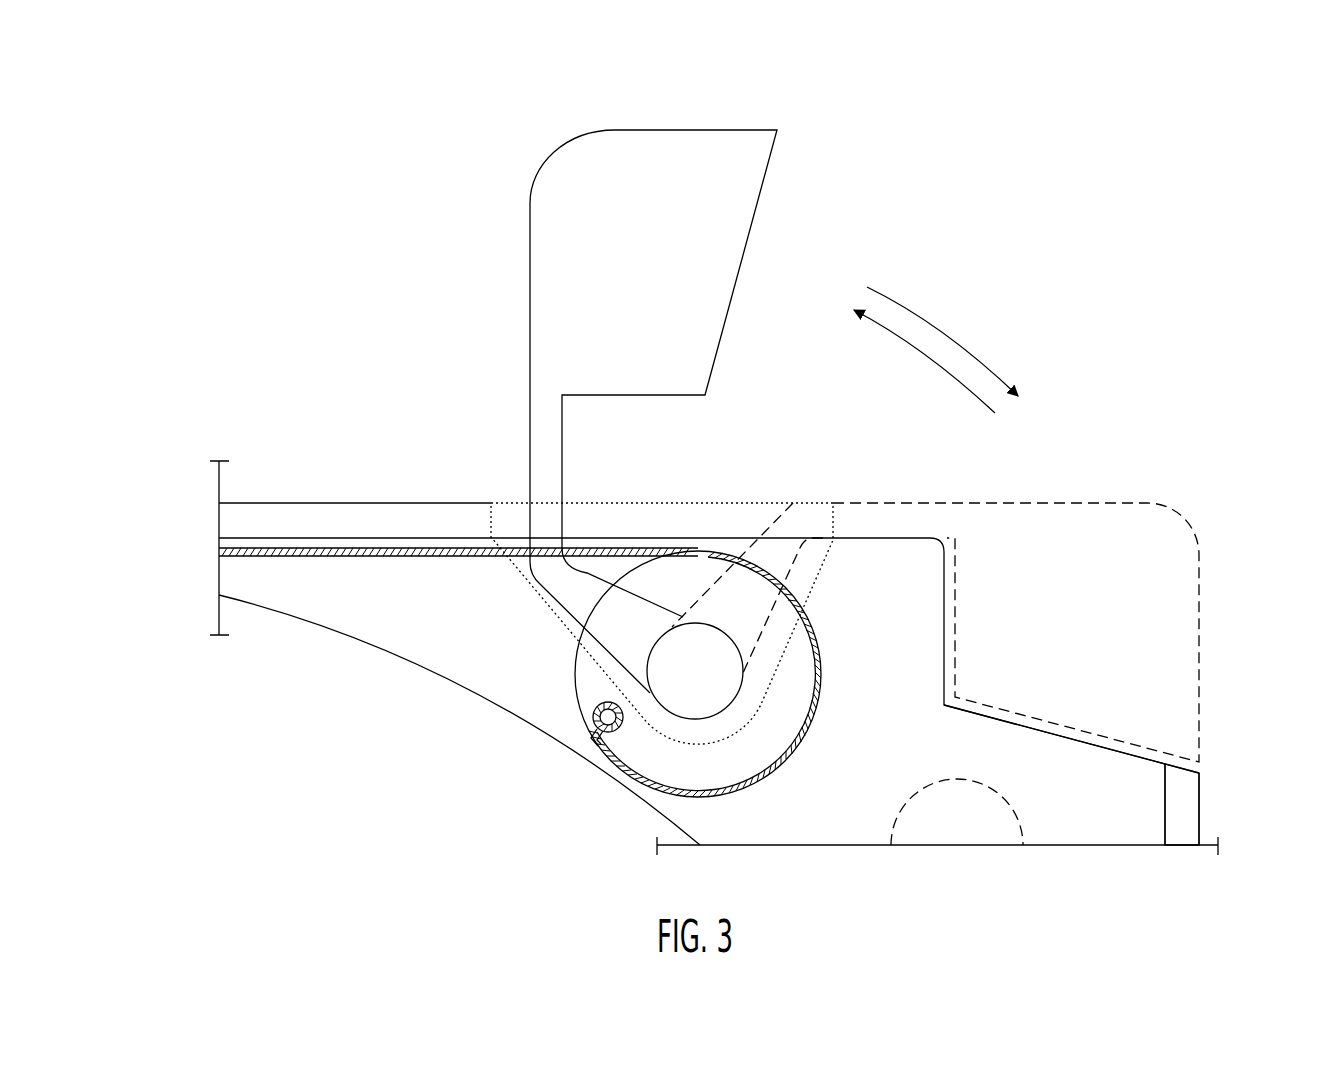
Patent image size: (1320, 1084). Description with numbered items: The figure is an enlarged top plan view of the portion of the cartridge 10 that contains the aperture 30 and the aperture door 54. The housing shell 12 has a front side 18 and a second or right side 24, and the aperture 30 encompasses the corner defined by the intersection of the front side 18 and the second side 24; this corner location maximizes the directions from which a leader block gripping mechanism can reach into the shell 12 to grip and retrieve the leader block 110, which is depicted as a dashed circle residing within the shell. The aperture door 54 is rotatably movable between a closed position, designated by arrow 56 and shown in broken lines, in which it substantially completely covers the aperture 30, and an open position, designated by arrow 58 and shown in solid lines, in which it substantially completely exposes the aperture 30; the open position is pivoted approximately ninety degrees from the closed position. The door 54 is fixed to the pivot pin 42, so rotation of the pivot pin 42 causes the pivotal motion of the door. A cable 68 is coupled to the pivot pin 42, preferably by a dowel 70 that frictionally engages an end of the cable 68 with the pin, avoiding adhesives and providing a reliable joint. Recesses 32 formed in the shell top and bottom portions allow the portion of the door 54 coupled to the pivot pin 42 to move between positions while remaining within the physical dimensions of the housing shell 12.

The cartridge 10 is at (1131, 186).
The housing shell 12 is at (322, 590).
The front side 18 is at (350, 501).
The cable 68 is at (410, 547).
The pivot pin 42 is at (645, 766).
The dowel 70 is at (594, 733).
The aperture door 54 is at (703, 148).
The recesses 32 is at (722, 518).
The arrow 56 is at (1015, 380).
The arrow 58 is at (862, 323).
The aperture 30 is at (1199, 765).
The second side 24 is at (1199, 802).
The leader block 110 is at (965, 818).